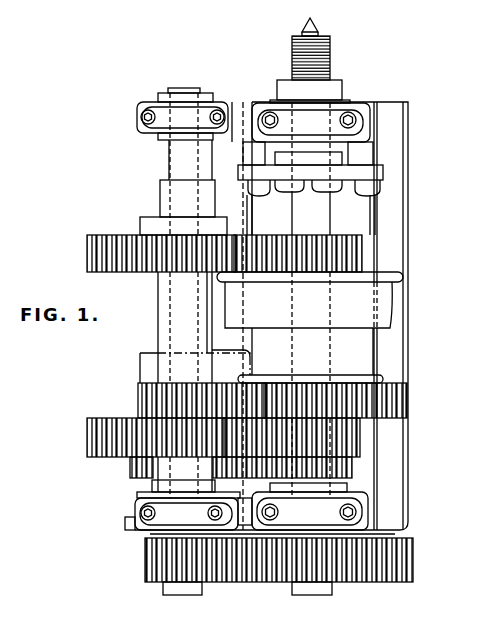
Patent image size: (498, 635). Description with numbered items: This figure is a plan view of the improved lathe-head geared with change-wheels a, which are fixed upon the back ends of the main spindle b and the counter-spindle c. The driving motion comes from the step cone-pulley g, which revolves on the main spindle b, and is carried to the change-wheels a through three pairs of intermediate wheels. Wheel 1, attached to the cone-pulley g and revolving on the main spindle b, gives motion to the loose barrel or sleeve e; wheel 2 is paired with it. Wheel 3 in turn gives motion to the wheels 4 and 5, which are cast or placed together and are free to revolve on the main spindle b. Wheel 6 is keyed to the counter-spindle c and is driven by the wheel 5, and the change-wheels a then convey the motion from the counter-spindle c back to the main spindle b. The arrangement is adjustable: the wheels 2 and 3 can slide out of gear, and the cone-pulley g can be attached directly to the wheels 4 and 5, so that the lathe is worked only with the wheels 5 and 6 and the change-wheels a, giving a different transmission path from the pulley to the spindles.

The intermediate wheel 1 is at (362, 256).
The intermediate wheel 2 is at (100, 252).
The intermediate wheel 3 is at (150, 398).
The intermediate wheel 4 is at (408, 400).
The intermediate wheel 5 is at (360, 440).
The intermediate wheel 6 is at (142, 437).
The change-wheels a is at (175, 558).
The main spindle b is at (312, 597).
The counter-spindle c is at (183, 596).
The loose barrel or sleeve e is at (195, 382).
The cone-pulley g is at (310, 327).